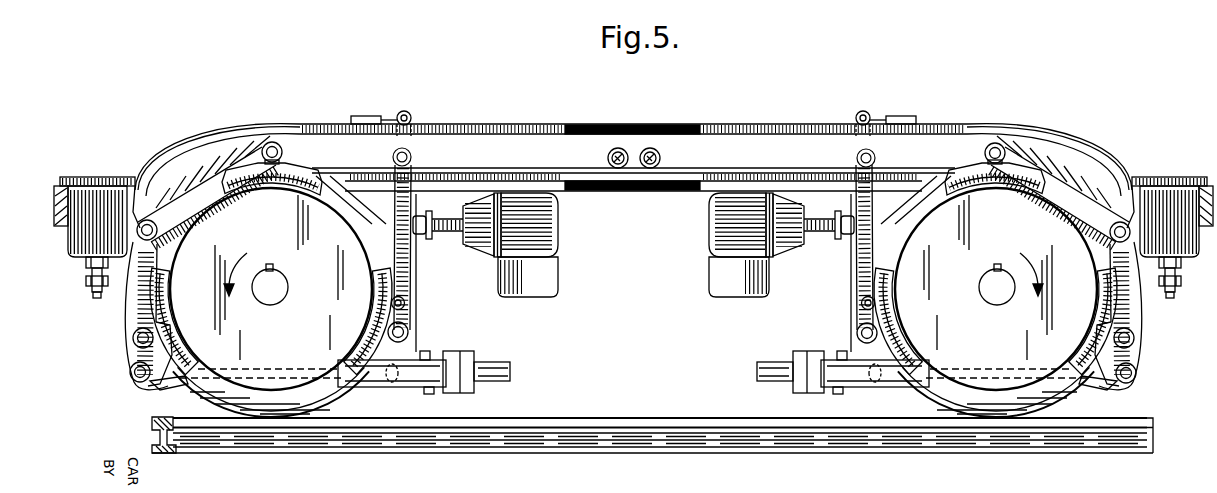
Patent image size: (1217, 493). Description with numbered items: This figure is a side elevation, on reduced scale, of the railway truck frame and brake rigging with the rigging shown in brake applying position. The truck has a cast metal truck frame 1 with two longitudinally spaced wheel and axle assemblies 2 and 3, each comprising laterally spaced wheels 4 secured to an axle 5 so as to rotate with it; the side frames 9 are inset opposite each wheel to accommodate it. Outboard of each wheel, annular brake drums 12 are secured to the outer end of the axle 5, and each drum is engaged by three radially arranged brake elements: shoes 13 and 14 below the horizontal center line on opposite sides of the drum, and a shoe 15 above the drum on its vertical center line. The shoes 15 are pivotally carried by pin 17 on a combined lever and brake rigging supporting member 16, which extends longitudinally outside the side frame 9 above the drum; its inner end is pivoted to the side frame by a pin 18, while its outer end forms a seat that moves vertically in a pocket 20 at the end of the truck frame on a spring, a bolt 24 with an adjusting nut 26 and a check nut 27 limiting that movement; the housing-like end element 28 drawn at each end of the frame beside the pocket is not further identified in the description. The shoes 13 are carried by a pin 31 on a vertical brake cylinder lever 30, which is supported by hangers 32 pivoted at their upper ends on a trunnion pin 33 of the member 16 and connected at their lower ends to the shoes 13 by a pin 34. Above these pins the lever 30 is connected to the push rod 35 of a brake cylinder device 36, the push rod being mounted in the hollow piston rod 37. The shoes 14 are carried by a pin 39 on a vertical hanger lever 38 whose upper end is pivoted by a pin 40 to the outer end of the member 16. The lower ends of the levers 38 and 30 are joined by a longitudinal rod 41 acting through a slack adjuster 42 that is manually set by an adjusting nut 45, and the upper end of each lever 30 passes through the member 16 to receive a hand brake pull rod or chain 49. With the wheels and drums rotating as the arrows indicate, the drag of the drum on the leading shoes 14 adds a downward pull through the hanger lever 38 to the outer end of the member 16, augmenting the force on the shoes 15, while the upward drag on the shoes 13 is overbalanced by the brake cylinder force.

The truck frame 1 is at (578, 125).
The wheel and axle assembly 2 is at (207, 393).
The wheel and axle assembly 3 is at (1076, 390).
The wheel 4 is at (260, 408).
The axle 5 is at (272, 291).
The side frame 9 is at (505, 132).
The brake drum 12 is at (290, 385).
The brake element 13 is at (370, 327).
The brake element 14 is at (157, 336).
The brake element 15 is at (271, 168).
The combined lever and brake rigging supporting member 16 is at (450, 150).
The pin 17 is at (280, 145).
The pin 18 is at (617, 147).
The pocket 20 is at (88, 259).
The bolt 24 is at (96, 298).
The adjusting nut 26 is at (92, 284).
The check nut 27 is at (112, 280).
The end spring housing 28 is at (80, 176).
The brake cylinder lever 30 is at (409, 333).
The pin 31 is at (431, 351).
The hanger 32 is at (409, 272).
The pin 33 is at (392, 157).
The pin 34 is at (405, 303).
The push rod 35 is at (429, 222).
The brake cylinder device 36 is at (548, 233).
The hollow piston rod 37 is at (445, 232).
The hanger lever 38 is at (130, 374).
The pin 39 is at (133, 340).
The pin 40 is at (160, 232).
The rod 41 is at (185, 388).
The slack adjuster 42 is at (426, 364).
The adjusting nut 45 is at (510, 373).
The hand brake pull rod or chain 49 is at (368, 116).